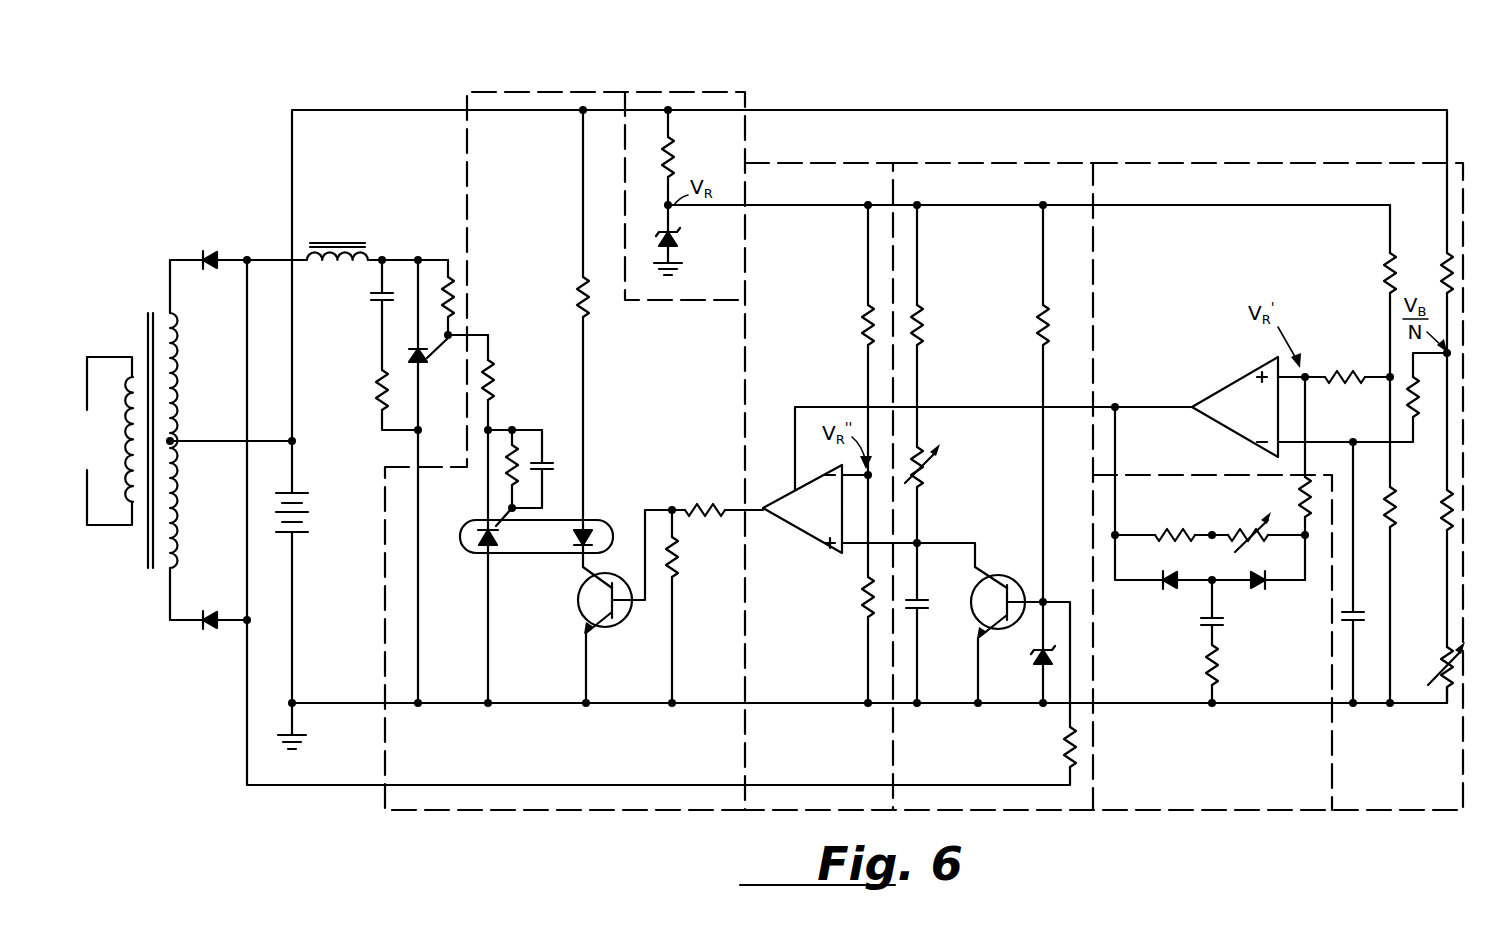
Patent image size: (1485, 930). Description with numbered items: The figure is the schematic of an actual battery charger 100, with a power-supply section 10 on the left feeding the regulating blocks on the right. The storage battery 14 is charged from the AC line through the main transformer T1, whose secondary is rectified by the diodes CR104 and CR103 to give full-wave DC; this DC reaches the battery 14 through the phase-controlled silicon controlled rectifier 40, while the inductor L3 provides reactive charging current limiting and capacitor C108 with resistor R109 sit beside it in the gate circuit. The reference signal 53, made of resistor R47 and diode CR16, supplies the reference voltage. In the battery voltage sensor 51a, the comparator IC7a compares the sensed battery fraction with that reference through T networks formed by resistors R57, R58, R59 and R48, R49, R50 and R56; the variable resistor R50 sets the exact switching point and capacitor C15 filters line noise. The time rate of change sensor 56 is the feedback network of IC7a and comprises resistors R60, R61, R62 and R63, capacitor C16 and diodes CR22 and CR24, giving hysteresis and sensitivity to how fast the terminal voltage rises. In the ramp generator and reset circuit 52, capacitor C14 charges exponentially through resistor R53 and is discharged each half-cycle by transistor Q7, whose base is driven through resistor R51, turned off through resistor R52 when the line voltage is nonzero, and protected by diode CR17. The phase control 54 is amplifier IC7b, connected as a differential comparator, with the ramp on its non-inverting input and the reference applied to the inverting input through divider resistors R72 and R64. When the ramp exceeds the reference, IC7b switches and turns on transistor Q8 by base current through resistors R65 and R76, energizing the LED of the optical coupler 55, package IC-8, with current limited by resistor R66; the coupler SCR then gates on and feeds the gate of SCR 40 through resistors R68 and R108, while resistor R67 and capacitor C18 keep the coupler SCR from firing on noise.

The power supply 10 is at (189, 192).
The battery charger 100 is at (858, 66).
The storage battery 14 is at (306, 520).
The silicon controlled rectifier 40 is at (428, 370).
The reference signal 53 is at (697, 90).
The optical coupler 55 is at (580, 812).
The phase control 54 is at (827, 812).
The ramp generator and reset circuit 52 is at (1018, 812).
The time rate of change sensor 56 is at (1270, 812).
The battery voltage sensor 51a is at (1400, 812).
The main transformer T1 is at (134, 330).
The diode CR104 is at (208, 252).
The diode CR103 is at (208, 630).
The inductor L3 is at (341, 240).
The capacitor C108 is at (376, 303).
The resistor R109 is at (377, 386).
The resistor R108 is at (450, 275).
The resistor R47 is at (677, 170).
The diode CR16 is at (680, 237).
The resistor R66 is at (580, 285).
The resistor R68 is at (496, 385).
The resistor R67 is at (505, 470).
The capacitor C18 is at (545, 460).
The optical coupler package IC-8 is at (547, 556).
The transistor Q8 is at (581, 604).
The resistor R65 is at (690, 500).
The resistor R76 is at (681, 560).
The amplifier IC7b is at (977, 497).
The resistor R72 is at (861, 320).
The resistor R64 is at (859, 606).
The resistor R53 is at (926, 320).
The capacitor C14 is at (926, 609).
The resistor R51 is at (1049, 320).
The diode CR17 is at (1035, 657).
The transistor Q7 is at (996, 583).
The resistor R52 is at (1061, 742).
The comparator IC7a is at (1302, 407).
The resistor R59 is at (1338, 371).
The resistor R57 is at (1383, 268).
The resistor R58 is at (1396, 515).
The resistor R56 is at (1420, 420).
The resistor R48 is at (1445, 258).
The resistor R49 is at (1441, 522).
The variable resistor R50 is at (1440, 656).
The resistor R60 is at (1300, 502).
The resistor R62 is at (1168, 526).
The resistor R61 is at (1240, 528).
The diode CR22 is at (1168, 589).
The diode CR24 is at (1258, 588).
The capacitor C16 is at (1206, 629).
The resistor R63 is at (1221, 661).
The capacitor C15 is at (1359, 606).